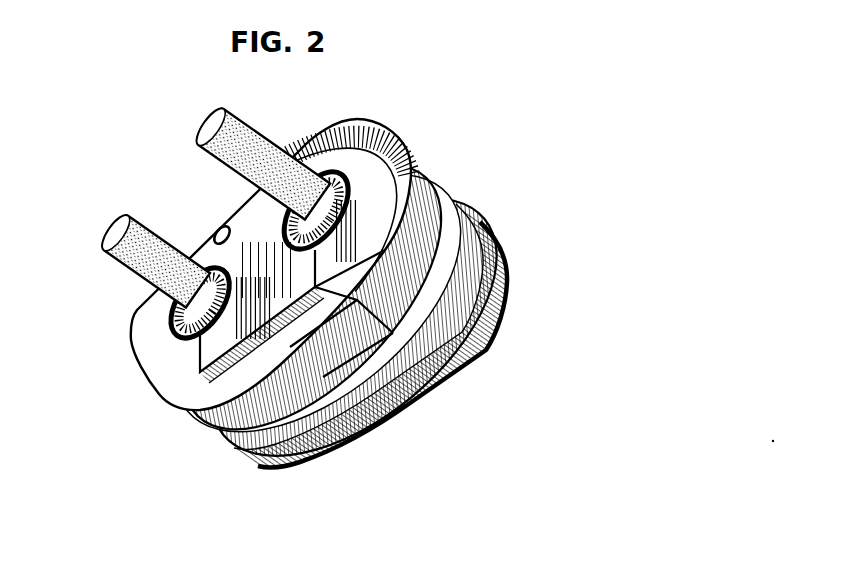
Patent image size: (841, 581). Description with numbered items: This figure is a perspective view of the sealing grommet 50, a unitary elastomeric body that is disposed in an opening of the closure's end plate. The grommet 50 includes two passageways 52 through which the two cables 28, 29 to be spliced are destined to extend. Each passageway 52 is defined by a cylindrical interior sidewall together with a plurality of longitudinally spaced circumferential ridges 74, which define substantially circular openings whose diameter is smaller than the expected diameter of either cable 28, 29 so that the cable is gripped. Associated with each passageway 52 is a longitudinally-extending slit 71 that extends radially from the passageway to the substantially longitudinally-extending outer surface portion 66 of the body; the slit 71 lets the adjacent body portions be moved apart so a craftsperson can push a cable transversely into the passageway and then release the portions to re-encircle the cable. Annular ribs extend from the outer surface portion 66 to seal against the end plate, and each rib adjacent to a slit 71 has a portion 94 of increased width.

The cable 28 is at (212, 164).
The cable 29 is at (137, 244).
The grommet 50 is at (155, 360).
The passageway 52 is at (381, 133).
The outer surface portion 66 is at (373, 413).
The slit 71 is at (437, 377).
The circumferential ridge 74 is at (172, 312).
The rib portion of increased width 94 is at (296, 468).